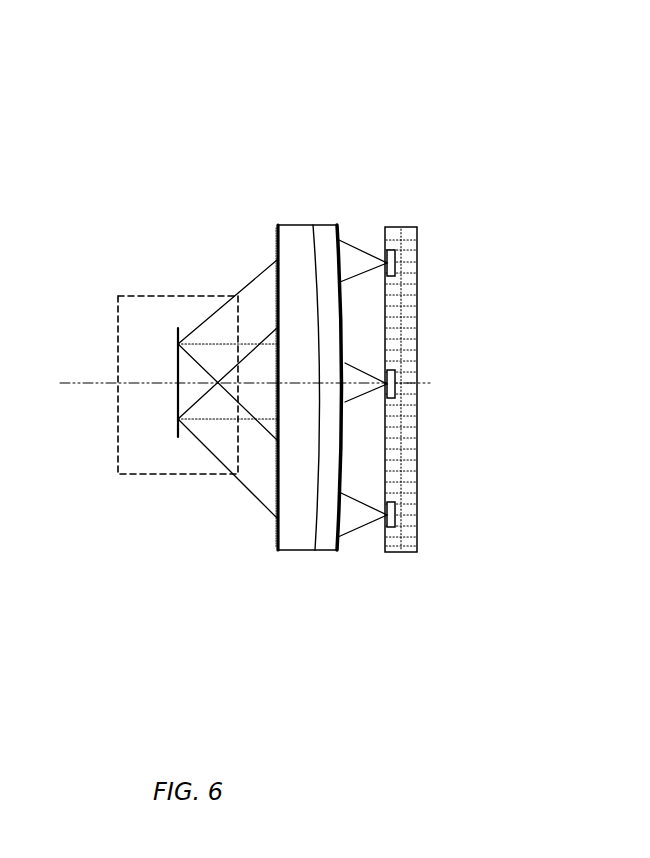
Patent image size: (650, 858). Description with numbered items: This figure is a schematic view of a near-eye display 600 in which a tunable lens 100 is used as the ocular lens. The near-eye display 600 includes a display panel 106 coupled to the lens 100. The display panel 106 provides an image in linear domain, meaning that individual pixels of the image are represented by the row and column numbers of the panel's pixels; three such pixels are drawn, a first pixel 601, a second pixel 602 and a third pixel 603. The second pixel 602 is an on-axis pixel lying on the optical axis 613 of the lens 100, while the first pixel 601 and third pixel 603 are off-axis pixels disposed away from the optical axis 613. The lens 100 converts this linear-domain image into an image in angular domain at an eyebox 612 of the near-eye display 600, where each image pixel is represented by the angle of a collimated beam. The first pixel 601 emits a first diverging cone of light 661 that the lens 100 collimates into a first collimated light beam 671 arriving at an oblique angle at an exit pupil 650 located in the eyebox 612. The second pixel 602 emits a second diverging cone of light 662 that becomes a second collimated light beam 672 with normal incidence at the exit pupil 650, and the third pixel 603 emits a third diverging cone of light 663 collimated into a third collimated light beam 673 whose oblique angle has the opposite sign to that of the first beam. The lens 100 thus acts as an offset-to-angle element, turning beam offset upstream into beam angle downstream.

The near-eye display 600 is at (171, 105).
The lens 100 is at (297, 205).
The display panel 106 is at (397, 232).
The first pixel 601 is at (395, 262).
The second pixel 602 is at (396, 383).
The third pixel 603 is at (395, 512).
The first diverging cone of light 661 is at (356, 255).
The second diverging cone of light 662 is at (362, 372).
The third diverging cone of light 663 is at (362, 520).
The first collimated light beam 671 is at (250, 300).
The second collimated light beam 672 is at (257, 396).
The third collimated light beam 673 is at (250, 475).
The exit pupil 650 is at (178, 363).
The optical axis 613 is at (72, 388).
The eyebox 612 is at (135, 458).